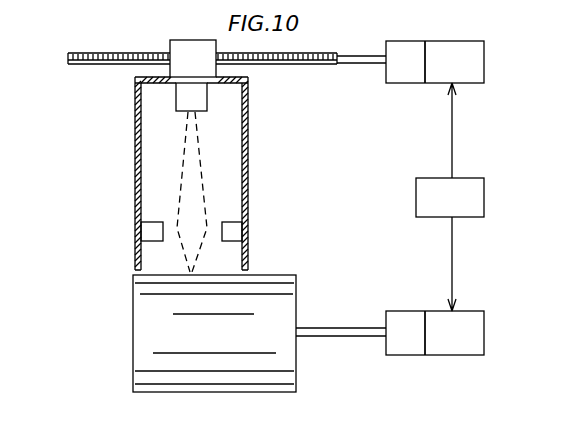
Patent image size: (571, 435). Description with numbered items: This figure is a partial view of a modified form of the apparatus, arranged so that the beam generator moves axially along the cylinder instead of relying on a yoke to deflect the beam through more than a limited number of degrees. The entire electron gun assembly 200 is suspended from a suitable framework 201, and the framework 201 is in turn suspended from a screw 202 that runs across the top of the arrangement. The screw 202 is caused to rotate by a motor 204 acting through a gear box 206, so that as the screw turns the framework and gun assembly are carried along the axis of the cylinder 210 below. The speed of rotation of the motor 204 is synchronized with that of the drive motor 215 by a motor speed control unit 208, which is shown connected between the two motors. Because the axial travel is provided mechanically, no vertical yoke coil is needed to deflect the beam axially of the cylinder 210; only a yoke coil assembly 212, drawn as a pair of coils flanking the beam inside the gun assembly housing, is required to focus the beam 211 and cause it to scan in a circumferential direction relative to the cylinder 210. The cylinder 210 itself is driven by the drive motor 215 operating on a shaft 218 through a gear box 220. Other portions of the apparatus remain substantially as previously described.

The electron gun assembly 200 is at (248, 157).
The framework 201 is at (192, 47).
The screw 202 is at (283, 62).
The motor 204 is at (473, 62).
The gear box 206 is at (406, 47).
The motor speed control unit 208 is at (478, 193).
The cylinder 210 is at (226, 341).
The beam 211 is at (181, 187).
The yoke coil assembly 212 is at (152, 230).
The drive motor 215 is at (474, 325).
The shaft 218 is at (358, 327).
The gear box 220 is at (400, 318).